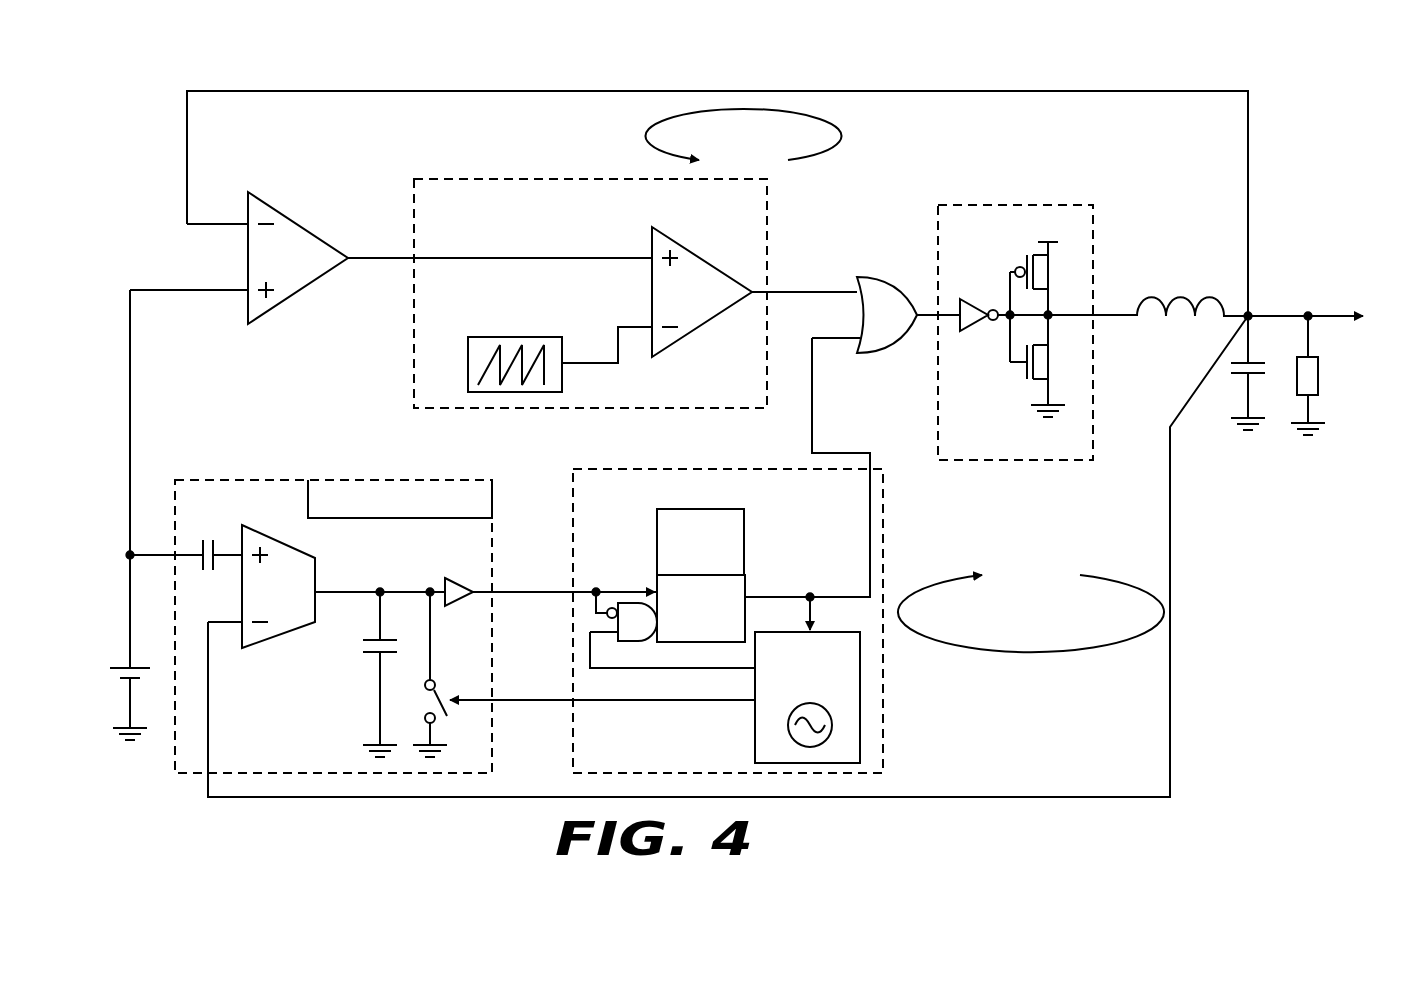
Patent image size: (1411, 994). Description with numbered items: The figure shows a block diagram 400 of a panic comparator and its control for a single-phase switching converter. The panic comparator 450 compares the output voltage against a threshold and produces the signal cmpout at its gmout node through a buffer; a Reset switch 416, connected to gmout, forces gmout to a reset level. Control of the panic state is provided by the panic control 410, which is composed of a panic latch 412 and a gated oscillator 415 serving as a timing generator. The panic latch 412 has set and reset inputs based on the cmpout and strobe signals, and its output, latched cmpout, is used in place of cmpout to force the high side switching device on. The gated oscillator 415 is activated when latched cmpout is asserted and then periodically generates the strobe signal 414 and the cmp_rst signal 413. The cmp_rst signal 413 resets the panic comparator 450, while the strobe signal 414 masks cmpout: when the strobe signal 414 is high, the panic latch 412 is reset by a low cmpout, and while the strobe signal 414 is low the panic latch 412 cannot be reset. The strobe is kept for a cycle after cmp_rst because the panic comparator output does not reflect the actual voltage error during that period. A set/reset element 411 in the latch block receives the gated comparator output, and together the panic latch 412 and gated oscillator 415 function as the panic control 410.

The block diagram of the panic comparator and its control 400 is at (314, 44).
The panic comparator 450 is at (370, 485).
The panic control 410 is at (883, 742).
The set/reset latch 411 is at (660, 580).
The panic latch 412 is at (680, 510).
The cmp_rst signal 413 is at (590, 693).
The strobe signal 414 is at (590, 660).
The gated oscillator (OSC) 415 is at (755, 742).
The Reset switch 416 is at (427, 702).